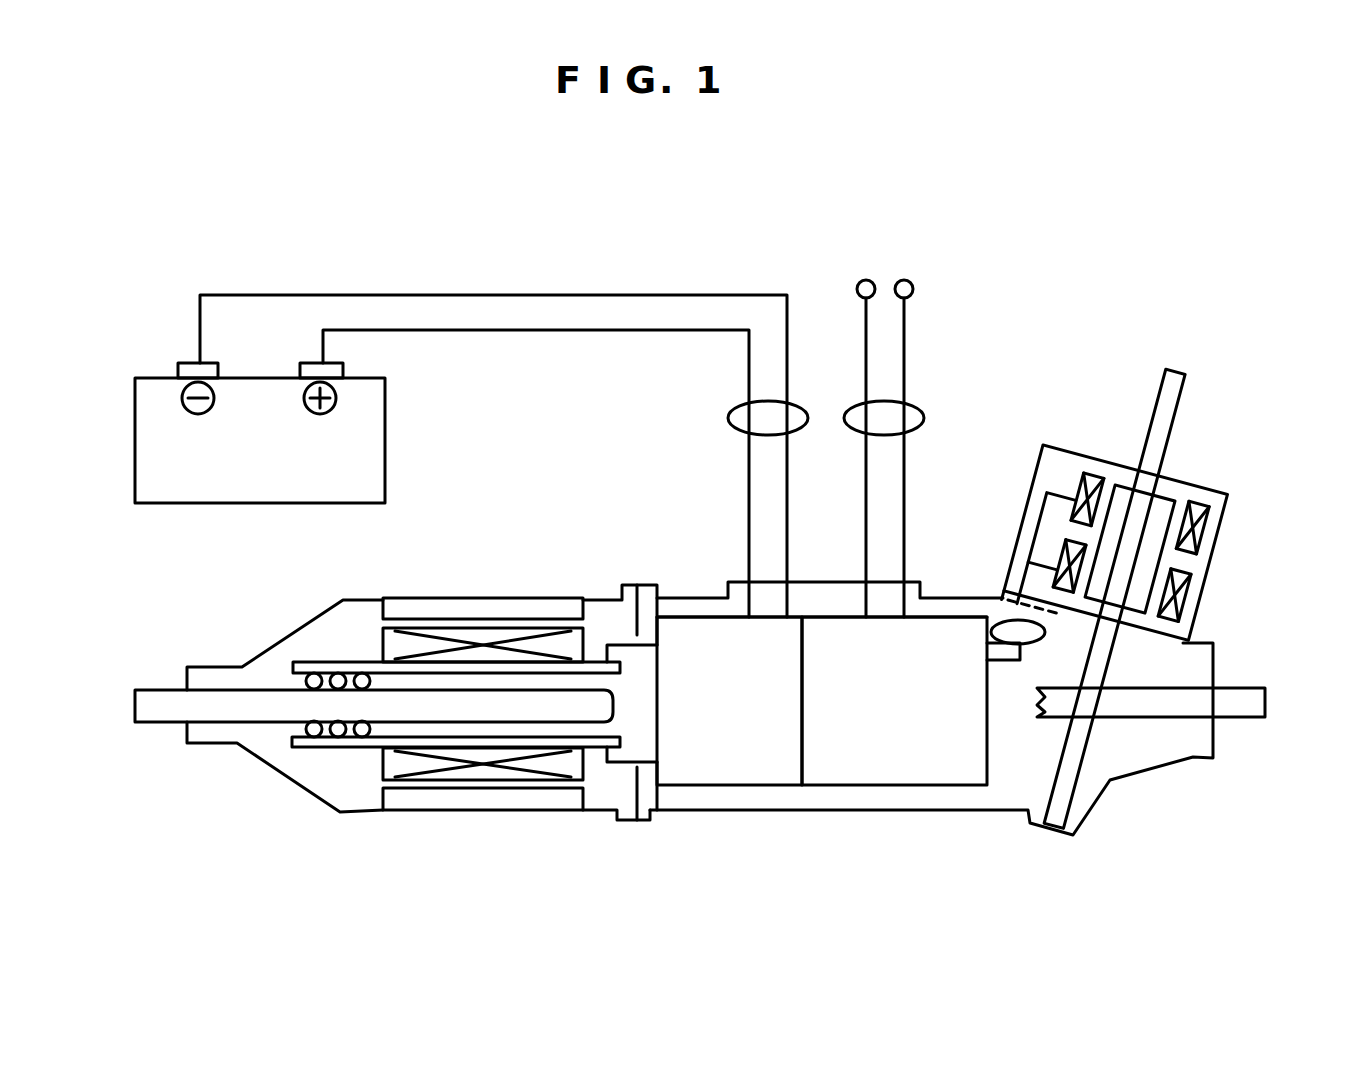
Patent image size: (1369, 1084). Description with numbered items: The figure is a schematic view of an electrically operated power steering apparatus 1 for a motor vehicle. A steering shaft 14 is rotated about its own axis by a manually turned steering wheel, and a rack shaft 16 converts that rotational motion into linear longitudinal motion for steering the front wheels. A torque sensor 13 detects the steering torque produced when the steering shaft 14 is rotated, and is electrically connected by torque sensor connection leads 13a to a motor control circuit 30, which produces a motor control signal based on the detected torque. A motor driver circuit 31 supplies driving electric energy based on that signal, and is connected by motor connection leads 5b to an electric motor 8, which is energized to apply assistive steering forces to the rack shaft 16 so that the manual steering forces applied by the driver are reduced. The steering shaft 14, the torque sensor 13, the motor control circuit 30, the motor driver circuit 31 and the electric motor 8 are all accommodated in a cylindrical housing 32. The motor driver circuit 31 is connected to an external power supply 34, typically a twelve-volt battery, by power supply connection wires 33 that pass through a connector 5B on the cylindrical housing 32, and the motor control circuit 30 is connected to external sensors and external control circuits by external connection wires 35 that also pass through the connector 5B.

The electrically operated power steering apparatus 1 is at (656, 263).
The connector 5B is at (912, 582).
The motor connection leads 5b is at (617, 768).
The electric motor 8 is at (443, 817).
The torque sensor 13 is at (1198, 578).
The torque sensor connection leads 13a is at (1040, 648).
The steering shaft 14 is at (1172, 405).
The rack shaft 16 is at (1247, 707).
The motor control circuit 30 is at (905, 770).
The motor driver circuit 31 is at (775, 770).
The cylindrical housing 32 is at (497, 598).
The power supply connection wires 33 is at (728, 408).
The external power supply 34 is at (370, 425).
The external connection wires 35 is at (912, 405).